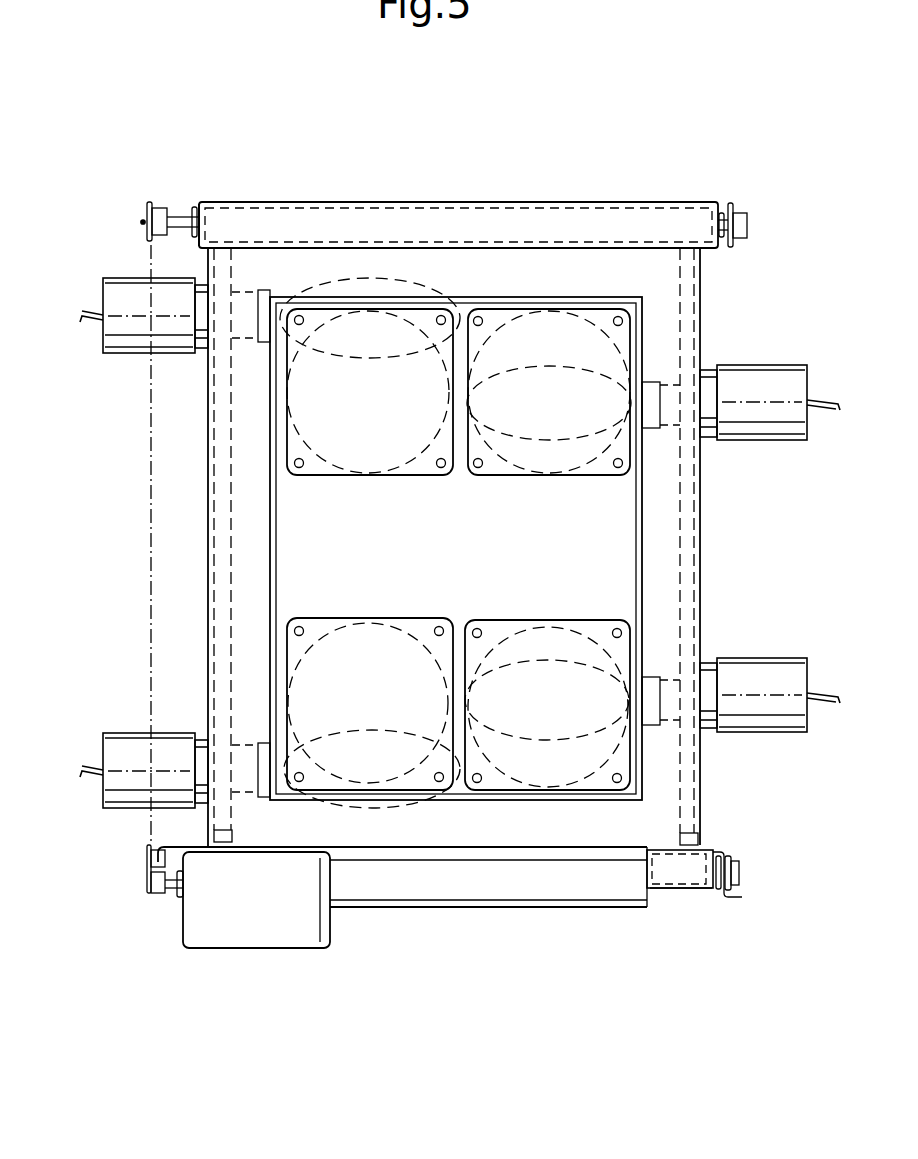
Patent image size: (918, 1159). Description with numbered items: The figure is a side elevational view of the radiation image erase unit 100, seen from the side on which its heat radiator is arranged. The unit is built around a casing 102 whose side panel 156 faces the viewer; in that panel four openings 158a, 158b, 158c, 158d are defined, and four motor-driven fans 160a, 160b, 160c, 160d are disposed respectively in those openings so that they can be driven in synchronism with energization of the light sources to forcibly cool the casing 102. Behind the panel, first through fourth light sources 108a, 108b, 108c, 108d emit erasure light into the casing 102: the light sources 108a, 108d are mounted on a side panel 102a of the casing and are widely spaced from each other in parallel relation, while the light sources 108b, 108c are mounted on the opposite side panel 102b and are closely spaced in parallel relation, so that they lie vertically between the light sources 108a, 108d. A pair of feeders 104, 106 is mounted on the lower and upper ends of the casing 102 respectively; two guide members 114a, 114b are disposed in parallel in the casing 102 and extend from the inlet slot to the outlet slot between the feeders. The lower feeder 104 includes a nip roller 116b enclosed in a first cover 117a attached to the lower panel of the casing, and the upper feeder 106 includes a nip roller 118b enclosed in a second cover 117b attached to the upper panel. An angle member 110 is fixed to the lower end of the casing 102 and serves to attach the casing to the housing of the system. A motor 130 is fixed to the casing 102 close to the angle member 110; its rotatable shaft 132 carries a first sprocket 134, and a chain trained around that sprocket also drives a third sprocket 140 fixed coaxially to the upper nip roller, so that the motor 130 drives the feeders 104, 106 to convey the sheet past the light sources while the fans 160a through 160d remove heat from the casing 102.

The radiation image erase unit 100 is at (706, 533).
The casing 102 is at (706, 335).
The side panel 102a is at (208, 572).
The opposite side panel 102b is at (700, 572).
The feeder 104 is at (694, 892).
The feeder 106 is at (484, 201).
The first light source 108a is at (463, 297).
The second light source 108b is at (556, 380).
The third light source 108c is at (548, 680).
The fourth light source 108d is at (348, 743).
The angle member 110 is at (500, 910).
The guide member 114a is at (222, 460).
The guide member 114b is at (683, 487).
The nip roller 116b is at (668, 872).
The first cover 117a is at (679, 890).
The second cover 117b is at (281, 200).
The nip roller 118b is at (367, 222).
The motor 130 is at (262, 935).
The rotatable shaft 132 is at (172, 890).
The first sprocket 134 is at (148, 885).
The third sprocket 140 is at (148, 210).
The side panel 156 is at (647, 312).
The opening 158a is at (368, 422).
The opening 158b is at (549, 422).
The opening 158c is at (548, 784).
The opening 158d is at (378, 782).
The motor-driven fan 160a is at (348, 476).
The motor-driven fan 160b is at (505, 476).
The motor-driven fan 160c is at (545, 797).
The motor-driven fan 160d is at (390, 790).